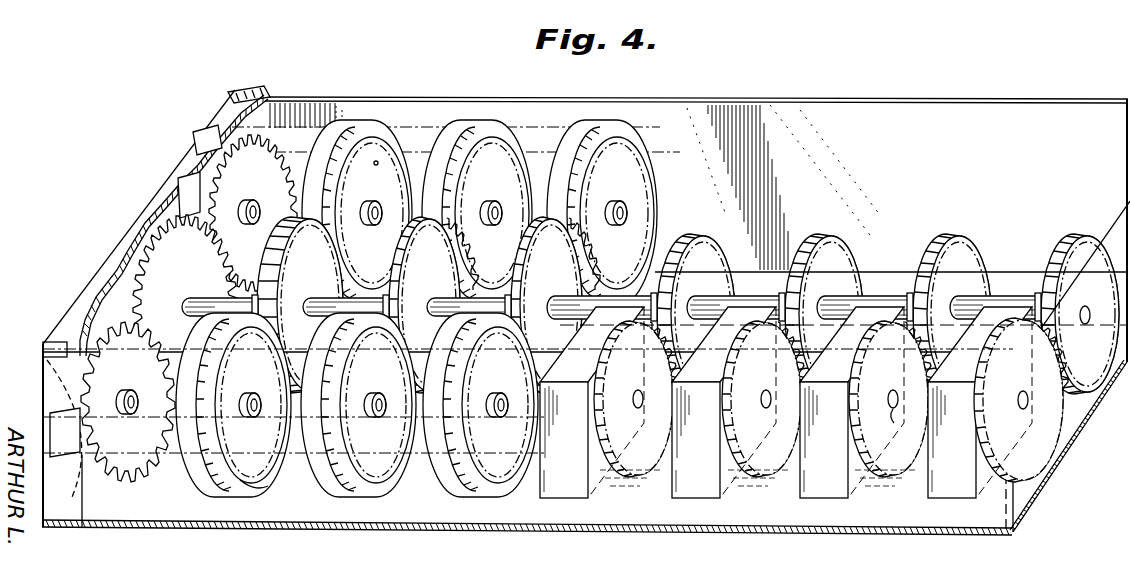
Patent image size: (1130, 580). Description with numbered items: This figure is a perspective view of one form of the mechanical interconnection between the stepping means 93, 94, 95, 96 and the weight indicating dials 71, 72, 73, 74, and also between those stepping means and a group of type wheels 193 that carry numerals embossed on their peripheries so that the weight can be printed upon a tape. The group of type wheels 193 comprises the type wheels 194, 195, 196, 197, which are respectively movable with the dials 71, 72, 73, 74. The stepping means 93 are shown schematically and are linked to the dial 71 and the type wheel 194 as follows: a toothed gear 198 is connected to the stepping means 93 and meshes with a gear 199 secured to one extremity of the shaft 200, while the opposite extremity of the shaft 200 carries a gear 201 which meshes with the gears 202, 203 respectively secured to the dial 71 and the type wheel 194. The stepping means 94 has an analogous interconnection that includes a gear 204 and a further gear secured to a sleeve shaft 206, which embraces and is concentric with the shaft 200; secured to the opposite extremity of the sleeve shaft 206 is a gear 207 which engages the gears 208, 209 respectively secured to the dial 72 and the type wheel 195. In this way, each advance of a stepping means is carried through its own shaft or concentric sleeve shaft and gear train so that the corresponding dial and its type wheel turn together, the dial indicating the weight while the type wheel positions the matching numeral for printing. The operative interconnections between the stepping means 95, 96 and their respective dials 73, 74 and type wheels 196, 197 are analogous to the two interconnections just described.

The weight indicating dial 71 is at (75, 365).
The weight indicating dial 72 is at (213, 327).
The weight indicating dial 73 is at (334, 335).
The weight indicating dial 74 is at (456, 337).
The stepping means 93 is at (962, 445).
The stepping means 94 is at (836, 445).
The stepping means 95 is at (708, 445).
The stepping means 96 is at (576, 445).
The group of type wheels 193 is at (433, 119).
The type wheel 194 is at (200, 138).
The type wheel 195 is at (327, 131).
The type wheel 196 is at (455, 140).
The type wheel 197 is at (576, 140).
The toothed gear 198 is at (1032, 462).
The gear 199 is at (1083, 373).
The shaft 200 is at (1013, 292).
The gear 201 is at (160, 222).
The gear 202 is at (92, 322).
The gear 203 is at (196, 175).
The gear 204 is at (893, 425).
The sleeve shaft 206 is at (883, 292).
The gear 207 is at (328, 279).
The gear 208 is at (262, 478).
The gear 209 is at (376, 162).